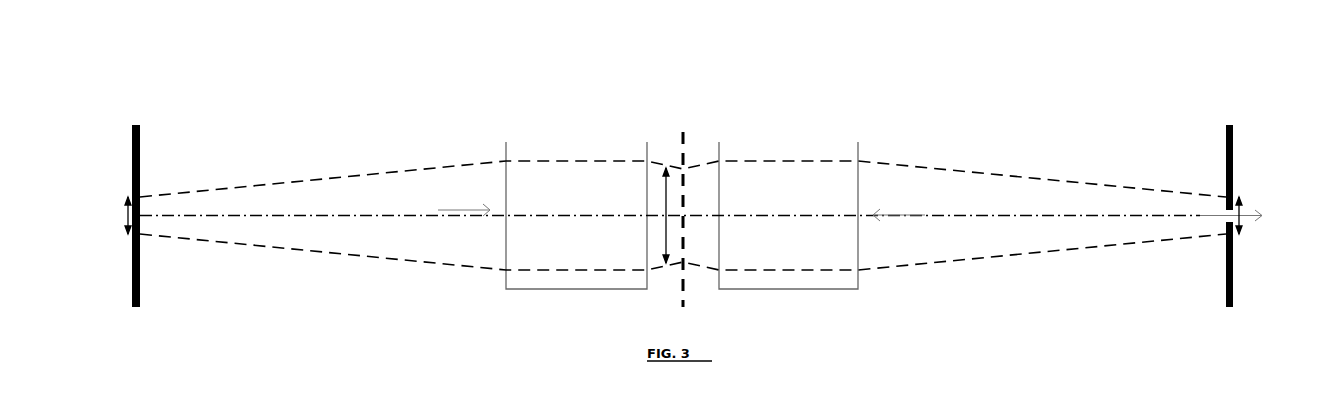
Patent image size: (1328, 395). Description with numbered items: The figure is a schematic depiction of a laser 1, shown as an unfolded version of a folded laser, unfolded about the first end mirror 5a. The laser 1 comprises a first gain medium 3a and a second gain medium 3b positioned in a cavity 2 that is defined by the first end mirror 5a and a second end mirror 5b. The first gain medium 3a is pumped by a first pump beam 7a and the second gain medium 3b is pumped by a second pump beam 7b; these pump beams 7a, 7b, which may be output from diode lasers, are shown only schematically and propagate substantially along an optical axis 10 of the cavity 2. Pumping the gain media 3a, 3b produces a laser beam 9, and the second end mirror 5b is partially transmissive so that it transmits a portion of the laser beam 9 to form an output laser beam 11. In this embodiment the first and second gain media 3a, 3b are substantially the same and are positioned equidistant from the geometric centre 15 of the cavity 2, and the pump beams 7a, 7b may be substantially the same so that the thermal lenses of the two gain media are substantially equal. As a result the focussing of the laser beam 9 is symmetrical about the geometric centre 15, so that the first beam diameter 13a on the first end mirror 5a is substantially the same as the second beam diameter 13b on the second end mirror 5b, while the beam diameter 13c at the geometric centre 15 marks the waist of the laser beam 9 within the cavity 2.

The laser 1 is at (600, 45).
The cavity 2 is at (472, 118).
The first gain medium 3a is at (526, 142).
The second gain medium 3b is at (839, 142).
The first end mirror 5a is at (132, 152).
The second end mirror 5b is at (1235, 152).
The first pump beam 7a is at (464, 210).
The second pump beam 7b is at (904, 215).
The laser beam 9 is at (350, 176).
The optical axis 10 is at (1035, 215).
The output laser beam 11 is at (1248, 222).
The first beam diameter 13a is at (126, 200).
The second beam diameter 13b is at (1241, 200).
The beam diameter at geometric centre 13c is at (669, 197).
The geometric centre 15 is at (687, 141).